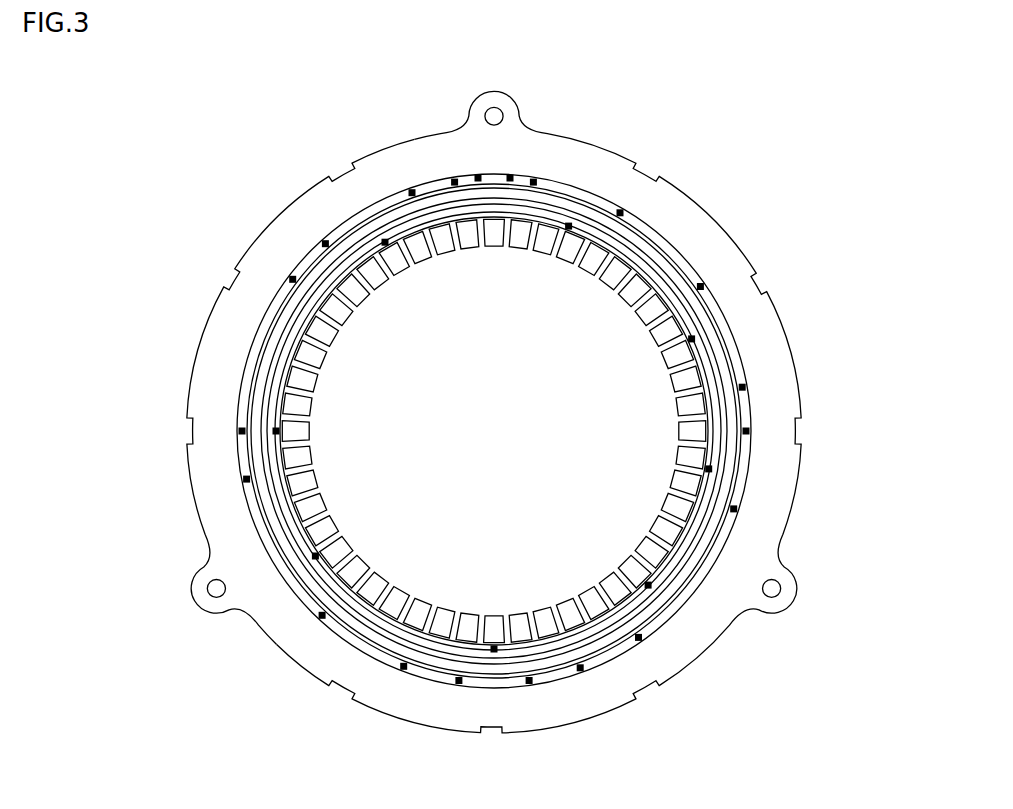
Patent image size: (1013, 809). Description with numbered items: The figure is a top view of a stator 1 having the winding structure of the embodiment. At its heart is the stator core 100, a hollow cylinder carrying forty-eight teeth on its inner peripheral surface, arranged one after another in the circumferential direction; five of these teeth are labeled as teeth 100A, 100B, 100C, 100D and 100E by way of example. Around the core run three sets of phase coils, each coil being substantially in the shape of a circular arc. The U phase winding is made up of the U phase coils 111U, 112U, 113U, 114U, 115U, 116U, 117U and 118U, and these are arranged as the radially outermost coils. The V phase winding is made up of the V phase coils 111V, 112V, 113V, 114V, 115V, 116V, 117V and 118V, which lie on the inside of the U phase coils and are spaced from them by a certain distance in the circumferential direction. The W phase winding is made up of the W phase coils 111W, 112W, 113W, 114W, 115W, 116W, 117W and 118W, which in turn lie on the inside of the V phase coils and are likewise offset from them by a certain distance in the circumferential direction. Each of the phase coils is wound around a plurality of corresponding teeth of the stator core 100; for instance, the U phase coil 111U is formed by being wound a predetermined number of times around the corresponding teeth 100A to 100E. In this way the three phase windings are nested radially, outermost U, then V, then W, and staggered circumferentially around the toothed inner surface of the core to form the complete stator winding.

The stator 1 is at (178, 178).
The stator core 100 is at (626, 175).
The tooth 100A is at (370, 304).
The tooth 100B is at (399, 307).
The tooth 100C is at (427, 291).
The tooth 100D is at (454, 268).
The tooth 100E is at (484, 285).
The U phase coil 111U is at (414, 190).
The V phase coil 111V is at (332, 255).
The W phase coil 111W is at (305, 429).
The U phase coil 112U is at (295, 275).
The V phase coil 112V is at (235, 430).
The W phase coil 112W is at (320, 546).
The U phase coil 113U is at (248, 477).
The V phase coil 113V is at (278, 630).
The W phase coil 113W is at (477, 647).
The U phase coil 114U is at (372, 650).
The V phase coil 114V is at (490, 667).
The W phase coil 114W is at (593, 622).
The U phase coil 115U is at (572, 670).
The V phase coil 115V is at (697, 660).
The W phase coil 115W is at (703, 472).
The U phase coil 116U is at (744, 480).
The V phase coil 116V is at (732, 432).
The W phase coil 116W is at (690, 308).
The U phase coil 117U is at (725, 328).
The V phase coil 117V is at (662, 257).
The W phase coil 117W is at (556, 255).
The U phase coil 118U is at (541, 182).
The V phase coil 118V is at (486, 182).
The W phase coil 118W is at (352, 300).